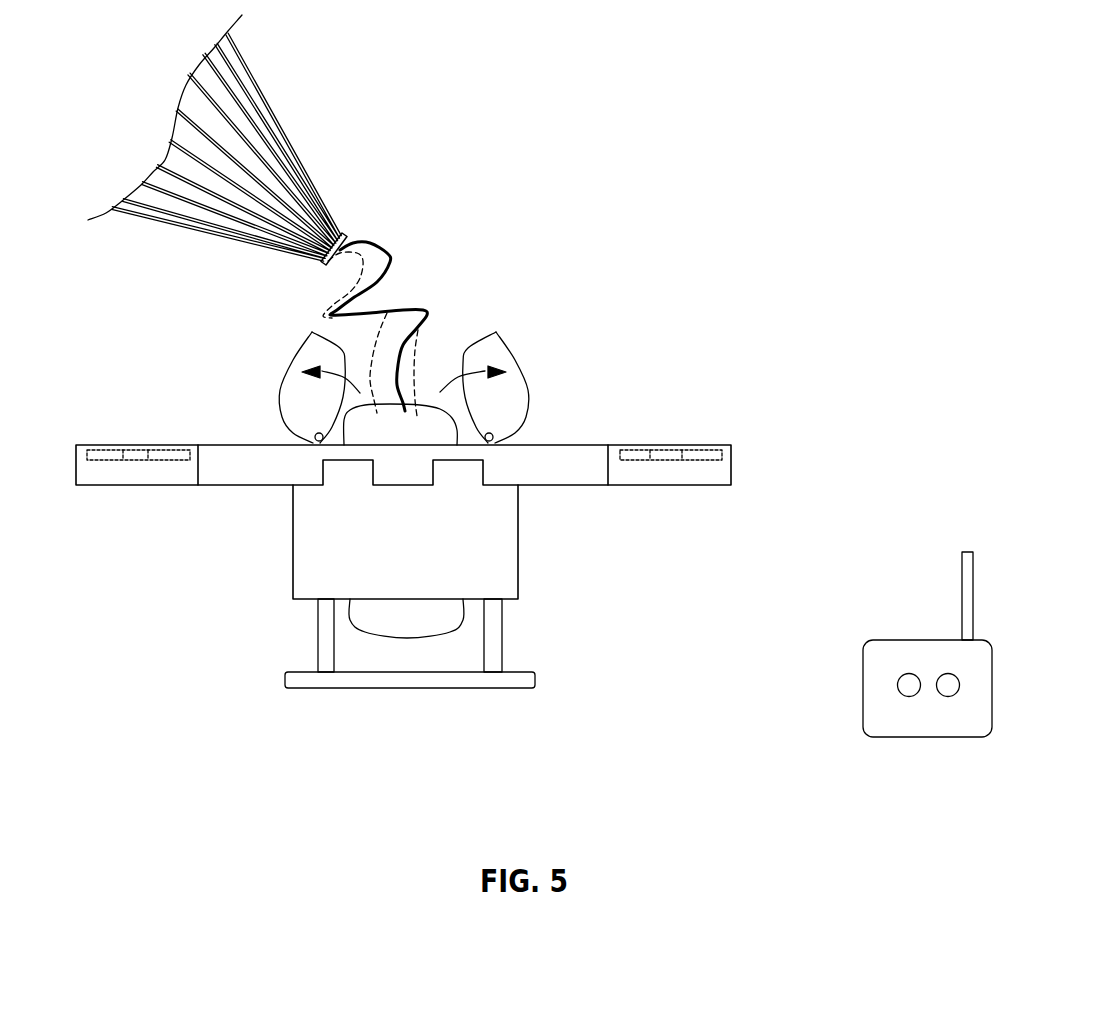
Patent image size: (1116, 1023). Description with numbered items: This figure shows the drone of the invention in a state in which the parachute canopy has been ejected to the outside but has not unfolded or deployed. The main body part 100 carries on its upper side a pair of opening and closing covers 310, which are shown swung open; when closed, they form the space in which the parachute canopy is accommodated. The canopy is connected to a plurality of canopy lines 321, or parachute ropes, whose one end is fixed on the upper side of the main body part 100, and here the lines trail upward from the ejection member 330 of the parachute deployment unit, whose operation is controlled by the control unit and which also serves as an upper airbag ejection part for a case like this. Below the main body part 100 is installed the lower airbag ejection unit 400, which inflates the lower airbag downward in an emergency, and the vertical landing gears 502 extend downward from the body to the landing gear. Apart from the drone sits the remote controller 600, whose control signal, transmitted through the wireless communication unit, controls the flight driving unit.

The main body part 100 is at (500, 550).
The opening and closing cover 310 is at (520, 383).
The canopy lines 321 is at (278, 121).
The ejection member 330 is at (420, 365).
The lower airbag ejection unit 400 is at (372, 618).
The vertical landing gears 502 is at (495, 648).
The remote controller 600 is at (932, 720).